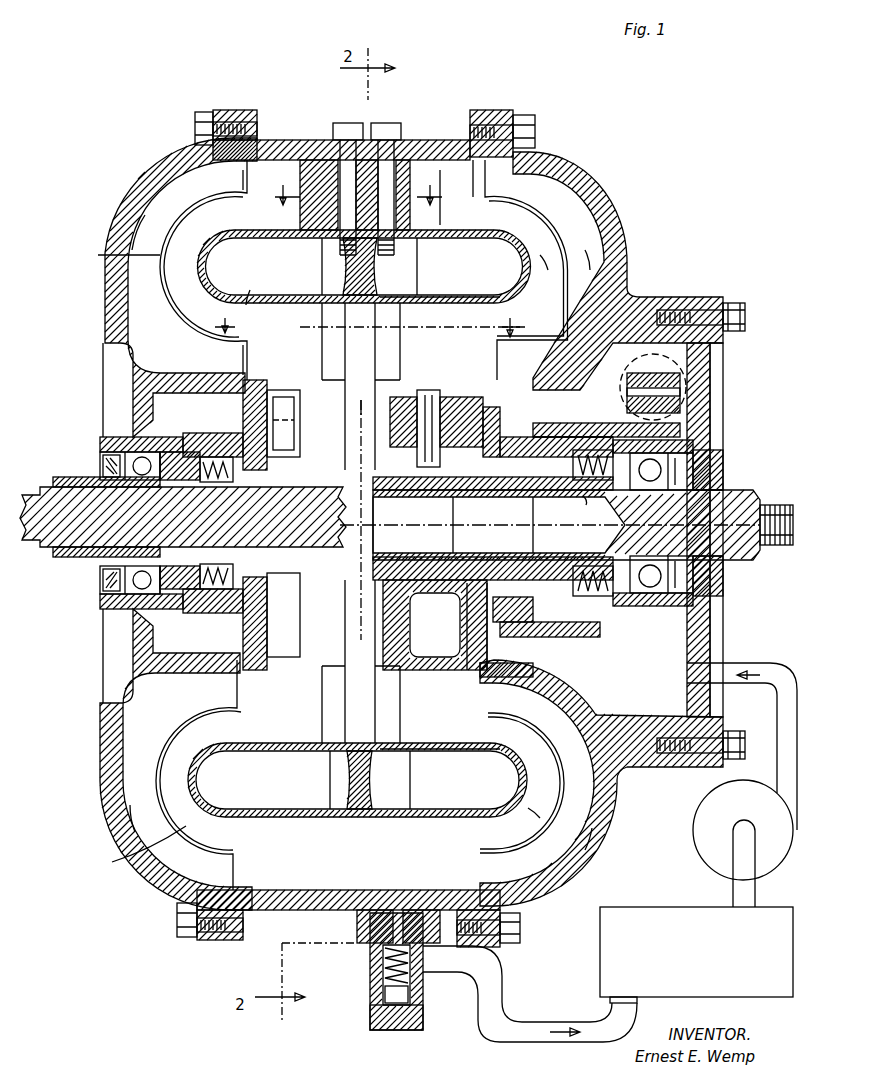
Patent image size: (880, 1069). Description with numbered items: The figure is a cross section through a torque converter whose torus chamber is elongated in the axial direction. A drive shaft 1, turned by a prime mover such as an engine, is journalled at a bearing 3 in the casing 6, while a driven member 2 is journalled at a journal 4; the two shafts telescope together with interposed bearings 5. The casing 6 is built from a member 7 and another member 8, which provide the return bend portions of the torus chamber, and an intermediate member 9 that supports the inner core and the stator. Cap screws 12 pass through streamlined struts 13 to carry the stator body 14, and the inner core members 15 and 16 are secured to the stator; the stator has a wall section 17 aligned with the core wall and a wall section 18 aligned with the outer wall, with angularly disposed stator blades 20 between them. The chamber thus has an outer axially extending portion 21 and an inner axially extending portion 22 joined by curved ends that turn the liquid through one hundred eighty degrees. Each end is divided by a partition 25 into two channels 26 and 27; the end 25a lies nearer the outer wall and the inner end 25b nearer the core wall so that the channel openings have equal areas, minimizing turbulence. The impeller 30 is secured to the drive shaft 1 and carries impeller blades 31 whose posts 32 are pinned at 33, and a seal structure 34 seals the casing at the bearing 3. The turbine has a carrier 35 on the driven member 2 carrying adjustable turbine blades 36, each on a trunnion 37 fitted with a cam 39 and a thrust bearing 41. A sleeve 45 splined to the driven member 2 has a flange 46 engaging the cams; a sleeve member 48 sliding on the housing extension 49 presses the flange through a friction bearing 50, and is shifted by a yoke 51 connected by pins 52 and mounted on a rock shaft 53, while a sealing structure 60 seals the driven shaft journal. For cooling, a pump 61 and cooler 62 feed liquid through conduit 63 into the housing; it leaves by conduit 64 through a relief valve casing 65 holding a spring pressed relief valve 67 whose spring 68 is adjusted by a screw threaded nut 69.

The drive shaft 1 is at (62, 512).
The driven member 2 is at (735, 505).
The bearing 3 is at (122, 452).
The journal 4 is at (670, 468).
The interposed bearings 5 is at (436, 345).
The casing 6 is at (182, 158).
The casing member 7 is at (108, 233).
The casing member 8 is at (620, 224).
The intermediate member 9 is at (438, 150).
The cap screws 12 is at (386, 124).
The struts 13 is at (318, 172).
The stator body 14 is at (380, 270).
The inner core member 15 is at (262, 238).
The inner core member 16 is at (458, 240).
The wall section 17 is at (400, 298).
The wall section 18 is at (349, 417).
The stator blades 20 is at (370, 346).
The outer axially extending portion 21 is at (452, 197).
The inner axially extending portion 22 is at (247, 302).
The partition 25 is at (187, 205).
The partition end 25a is at (250, 196).
The inner partition end 25b is at (248, 338).
The channel 26 is at (145, 215).
The channel 27 is at (313, 557).
The impeller 30 is at (255, 442).
The impeller blades 31 is at (258, 380).
The posts 32 is at (275, 406).
The pins 33 is at (270, 421).
The seal structure 34 is at (205, 576).
The carrier 35 is at (402, 621).
The turbine blade 36 is at (479, 396).
The trunnion 37 is at (410, 400).
The cam 39 is at (478, 400).
The thrust bearing 41 is at (432, 400).
The sleeve 45 is at (540, 616).
The flange 46 is at (475, 671).
The sleeve member 48 is at (575, 424).
The extension 49 is at (585, 634).
The friction bearing 50 is at (540, 424).
The yoke 51 is at (723, 478).
The pins 52 is at (758, 568).
The rock shaft 53 is at (680, 385).
The sealing structure 60 is at (585, 470).
The pump 61 is at (716, 804).
The cooler 62 is at (700, 907).
The conduit 63 is at (752, 663).
The conduit 64 is at (548, 1042).
The valve casing 65 is at (370, 979).
The relief valve 67 is at (385, 959).
The spring 68 is at (385, 998).
The screw threaded nut 69 is at (385, 1030).